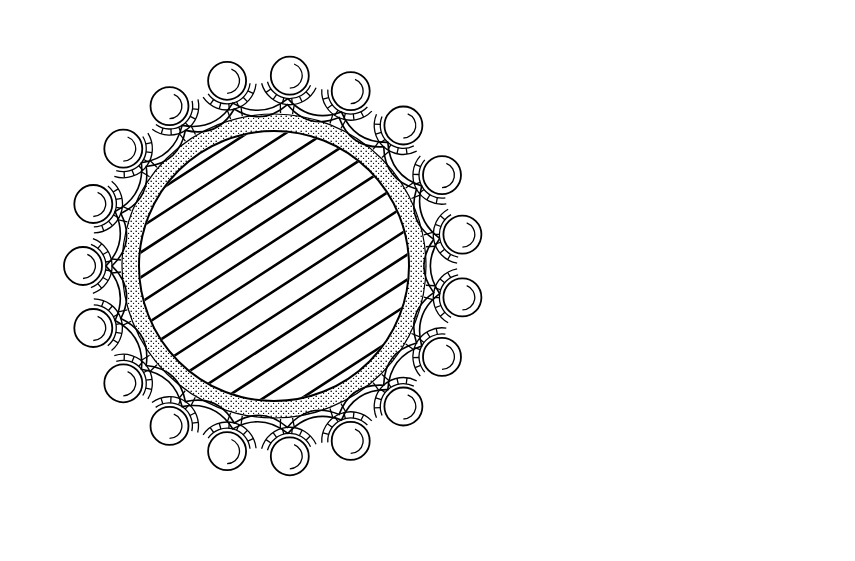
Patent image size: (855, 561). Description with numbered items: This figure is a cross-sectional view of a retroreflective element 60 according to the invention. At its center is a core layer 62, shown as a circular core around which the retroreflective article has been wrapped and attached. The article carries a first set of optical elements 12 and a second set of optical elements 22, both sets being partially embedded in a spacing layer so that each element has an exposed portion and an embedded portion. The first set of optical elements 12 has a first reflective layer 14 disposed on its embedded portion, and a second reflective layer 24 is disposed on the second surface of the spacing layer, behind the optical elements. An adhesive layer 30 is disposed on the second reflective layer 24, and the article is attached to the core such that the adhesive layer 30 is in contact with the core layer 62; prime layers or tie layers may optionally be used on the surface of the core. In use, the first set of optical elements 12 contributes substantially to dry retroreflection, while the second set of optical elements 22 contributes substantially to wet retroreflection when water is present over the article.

The retroreflective element 60 is at (436, 56).
The core layer 62 is at (401, 313).
The first set of optical elements 12 is at (175, 86).
The first reflective layer 14 is at (155, 125).
The second set of optical elements 22 is at (443, 158).
The second reflective layer 24 is at (310, 87).
The adhesive layer 30 is at (453, 207).